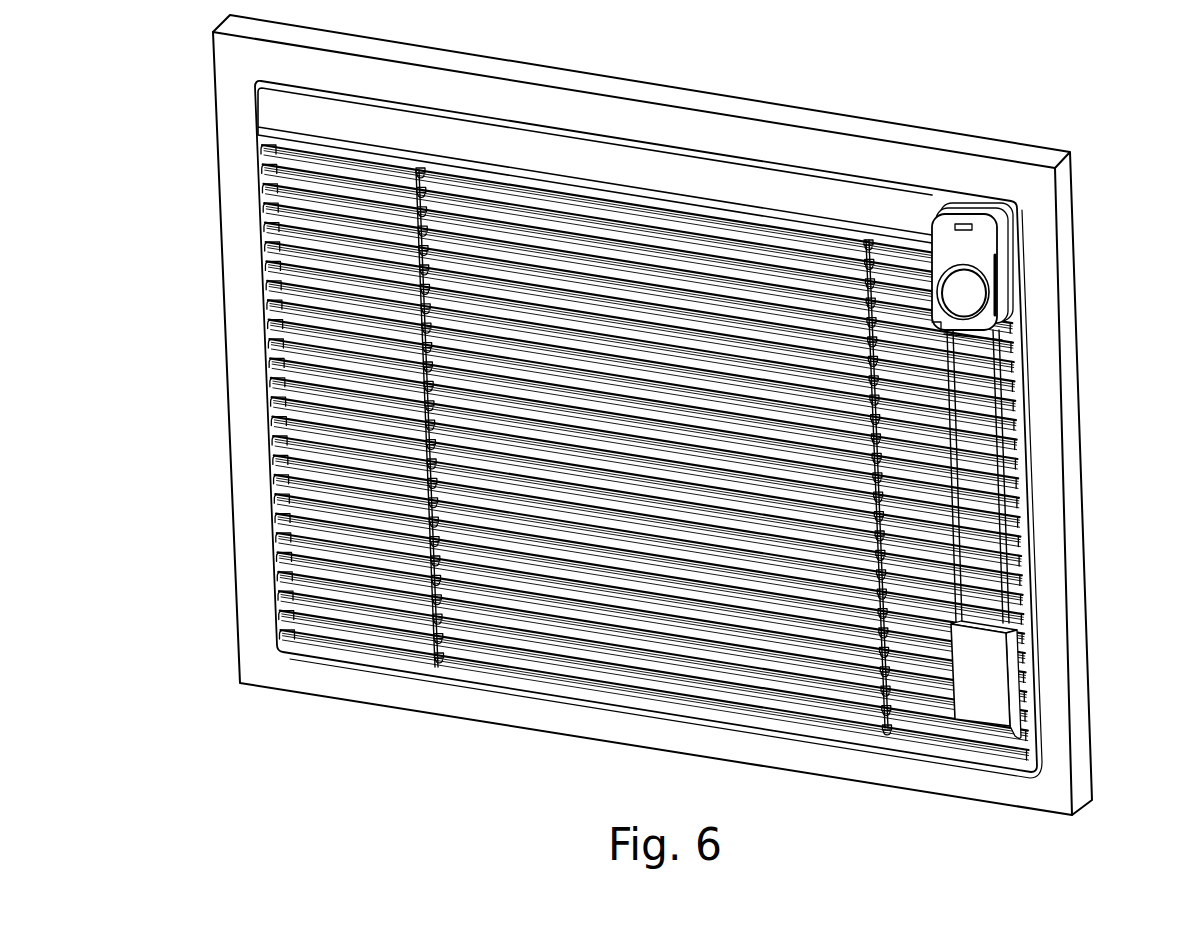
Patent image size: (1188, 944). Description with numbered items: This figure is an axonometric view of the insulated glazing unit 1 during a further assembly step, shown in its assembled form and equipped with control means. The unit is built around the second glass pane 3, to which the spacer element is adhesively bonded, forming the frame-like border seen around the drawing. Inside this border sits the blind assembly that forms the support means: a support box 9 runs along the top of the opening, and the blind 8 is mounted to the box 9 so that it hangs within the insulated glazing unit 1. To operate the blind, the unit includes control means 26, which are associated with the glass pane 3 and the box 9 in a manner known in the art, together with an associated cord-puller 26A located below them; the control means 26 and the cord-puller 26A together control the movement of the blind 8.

The insulated glazing unit 1 is at (658, 445).
The second glass pane 3 is at (257, 545).
The blind 8 is at (292, 618).
The support box 9 is at (862, 193).
The control means 26 is at (1000, 266).
The cord-puller 26A is at (986, 733).